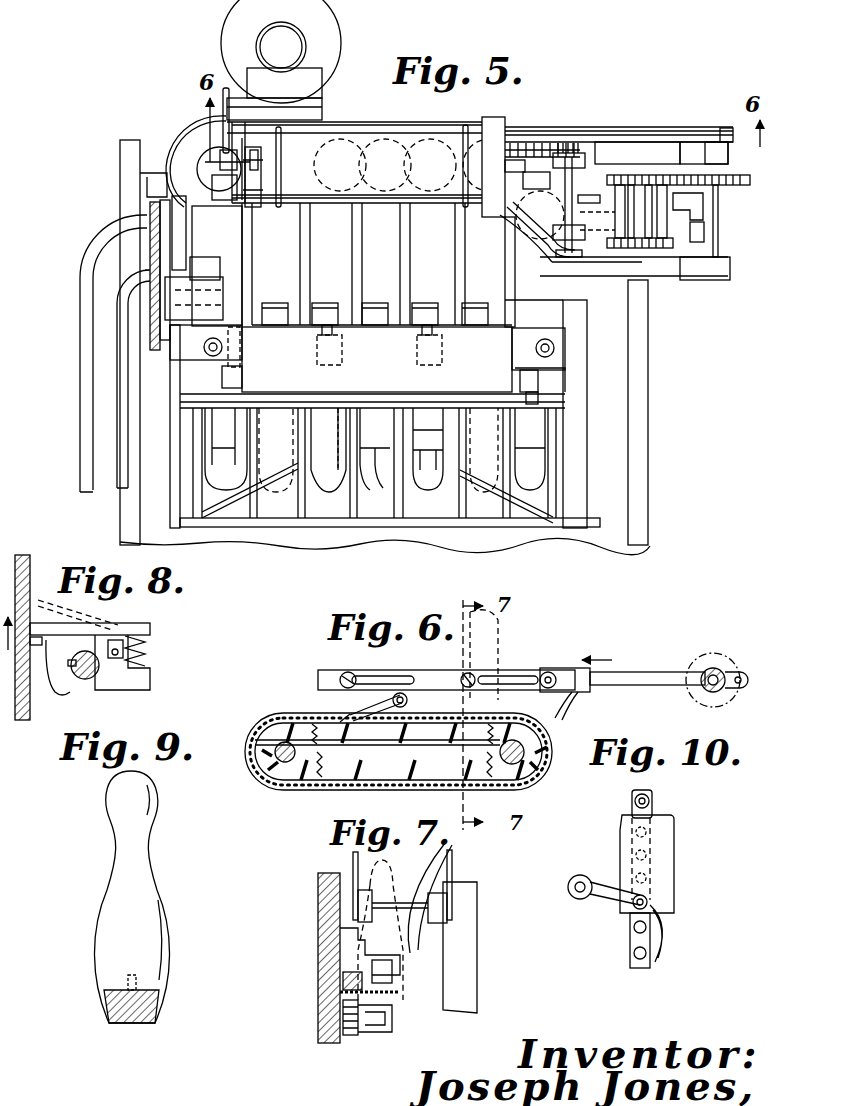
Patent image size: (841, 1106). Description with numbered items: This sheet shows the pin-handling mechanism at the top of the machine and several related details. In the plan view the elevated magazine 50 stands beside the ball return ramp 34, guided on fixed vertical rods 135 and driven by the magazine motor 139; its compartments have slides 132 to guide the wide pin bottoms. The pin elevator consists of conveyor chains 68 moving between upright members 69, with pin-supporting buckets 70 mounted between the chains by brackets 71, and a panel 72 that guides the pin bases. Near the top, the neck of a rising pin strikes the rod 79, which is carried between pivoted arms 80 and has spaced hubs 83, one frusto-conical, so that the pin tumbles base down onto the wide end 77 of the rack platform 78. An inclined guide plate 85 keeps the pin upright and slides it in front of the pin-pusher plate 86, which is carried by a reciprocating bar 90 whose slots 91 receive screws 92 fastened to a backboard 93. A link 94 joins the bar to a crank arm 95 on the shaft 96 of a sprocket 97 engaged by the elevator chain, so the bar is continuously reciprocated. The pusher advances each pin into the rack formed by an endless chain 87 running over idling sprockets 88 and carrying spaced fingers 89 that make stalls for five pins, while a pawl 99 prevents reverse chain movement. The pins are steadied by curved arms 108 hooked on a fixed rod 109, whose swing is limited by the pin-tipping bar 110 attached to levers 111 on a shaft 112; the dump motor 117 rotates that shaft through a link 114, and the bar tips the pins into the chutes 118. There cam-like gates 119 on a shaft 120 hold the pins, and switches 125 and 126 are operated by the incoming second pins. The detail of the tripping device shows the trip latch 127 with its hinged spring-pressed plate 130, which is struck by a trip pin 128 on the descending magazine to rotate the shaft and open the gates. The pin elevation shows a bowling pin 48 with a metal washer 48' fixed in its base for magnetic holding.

In FIG. 5, the dump motor 117 is at (242, 22).
In FIG. 5, the link 114 is at (226, 122).
In FIG. 5, the magazine motor 139 is at (192, 143).
In FIG. 5, the shaft 112 is at (345, 150).
In FIG. 5, the pin rack platform 78 is at (358, 165).
In FIG. 6, the pin rack platform 78 is at (393, 748).
In FIG. 7, the pin rack platform 78 is at (395, 1001).
In FIG. 5, the backboard 93 is at (375, 140).
In FIG. 7, the backboard 93 is at (318, 893).
In FIG. 5, the fixed rod 109 is at (405, 130).
In FIG. 5, the curved arms 108 is at (355, 150).
In FIG. 5, the platform wide end 77 is at (512, 185).
In FIG. 5, the pin-pusher plate 86 is at (538, 172).
In FIG. 6, the pin-pusher plate 86 is at (568, 702).
In FIG. 7, the pin-pusher plate 86 is at (388, 950).
In FIG. 5, the arms 80 is at (572, 152).
In FIG. 7, the arms 80 is at (352, 863).
In FIG. 5, the upright members 69 is at (612, 150).
In FIG. 7, the upright members 69 is at (470, 951).
In FIG. 5, the conveyor chains 68 is at (618, 177).
In FIG. 10, the conveyor chains 68 is at (630, 946).
In FIG. 5, the link 94 is at (676, 130).
In FIG. 6, the link 94 is at (630, 672).
In FIG. 5, the crank arm 95 is at (720, 140).
In FIG. 6, the crank arm 95 is at (730, 672).
In FIG. 5, the shaft 96 is at (722, 165).
In FIG. 6, the shaft 96 is at (700, 690).
In FIG. 5, the sprocket 97 is at (738, 182).
In FIG. 5, the rod or roller 79 is at (565, 205).
In FIG. 6, the rod or roller 79 is at (513, 655).
In FIG. 7, the rod or roller 79 is at (403, 872).
In FIG. 5, the pin-supporting plates or buckets 70 is at (695, 222).
In FIG. 10, the pin-supporting plates or buckets 70 is at (620, 903).
In FIG. 5, the panel 72 is at (690, 237).
In FIG. 5, the inclined guide plate 85 is at (512, 230).
In FIG. 7, the inclined guide plate 85 is at (452, 866).
In FIG. 5, the hubs 83 is at (525, 240).
In FIG. 7, the hubs 83 is at (358, 909).
In FIG. 5, the levers 111 is at (267, 186).
In FIG. 5, the pin-tipping or dumping bar 110 is at (344, 203).
In FIG. 5, the chutes 118 is at (423, 252).
In FIG. 5, the cam-like gates 119 is at (330, 305).
In FIG. 5, the fixed vertical shafts or rods 135 is at (205, 352).
In FIG. 5, the shaft 120 is at (225, 380).
In FIG. 8, the shaft 120 is at (88, 680).
In FIG. 5, the button-actuated switch 126 is at (342, 351).
In FIG. 5, the button-actuated switch 125 is at (443, 353).
In FIG. 5, the trip latch 127 is at (530, 383).
In FIG. 8, the trip latch 127 is at (112, 685).
In FIG. 5, the trip pin 128 is at (535, 396).
In FIG. 8, the trip pin 128 is at (48, 655).
In FIG. 5, the ball return ramp 34 is at (128, 407).
In FIG. 5, the slides 132 is at (382, 470).
In FIG. 5, the magazine 50 is at (575, 466).
In FIG. 8, the magazine 50 is at (20, 560).
In FIG. 8, the spring-pressed plate 130 is at (88, 624).
In FIG. 9, the bowling pin 48 is at (150, 897).
In FIG. 9, the metal washer or ring 48' is at (136, 1020).
In FIG. 6, the screws 92 is at (343, 673).
In FIG. 6, the slots 91 is at (380, 675).
In FIG. 6, the reciprocating bar 90 is at (433, 672).
In FIG. 7, the reciprocating bar 90 is at (340, 939).
In FIG. 6, the endless chain 87 is at (310, 718).
In FIG. 7, the endless chain 87 is at (343, 1031).
In FIG. 6, the pawl 99 is at (355, 702).
In FIG. 6, the fingers 89 is at (437, 720).
In FIG. 6, the idling sprockets 88 is at (270, 770).
In FIG. 10, the brackets 71 is at (672, 873).